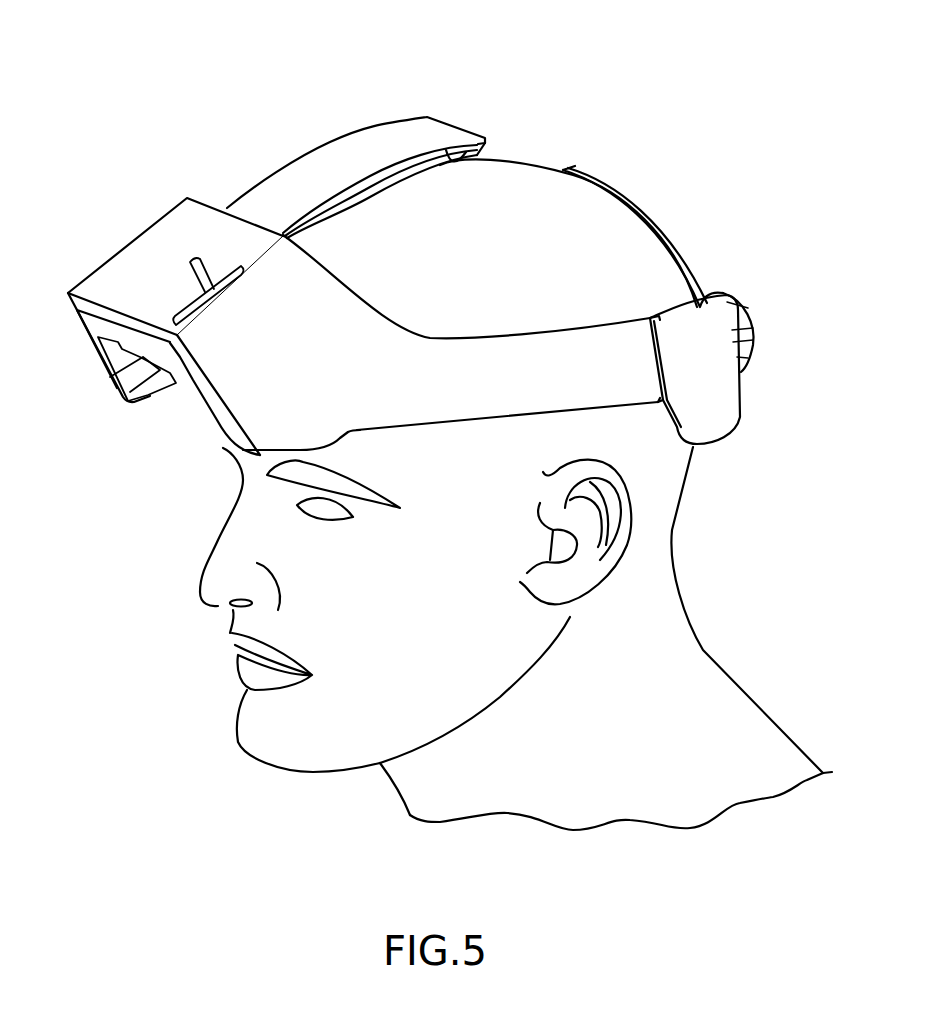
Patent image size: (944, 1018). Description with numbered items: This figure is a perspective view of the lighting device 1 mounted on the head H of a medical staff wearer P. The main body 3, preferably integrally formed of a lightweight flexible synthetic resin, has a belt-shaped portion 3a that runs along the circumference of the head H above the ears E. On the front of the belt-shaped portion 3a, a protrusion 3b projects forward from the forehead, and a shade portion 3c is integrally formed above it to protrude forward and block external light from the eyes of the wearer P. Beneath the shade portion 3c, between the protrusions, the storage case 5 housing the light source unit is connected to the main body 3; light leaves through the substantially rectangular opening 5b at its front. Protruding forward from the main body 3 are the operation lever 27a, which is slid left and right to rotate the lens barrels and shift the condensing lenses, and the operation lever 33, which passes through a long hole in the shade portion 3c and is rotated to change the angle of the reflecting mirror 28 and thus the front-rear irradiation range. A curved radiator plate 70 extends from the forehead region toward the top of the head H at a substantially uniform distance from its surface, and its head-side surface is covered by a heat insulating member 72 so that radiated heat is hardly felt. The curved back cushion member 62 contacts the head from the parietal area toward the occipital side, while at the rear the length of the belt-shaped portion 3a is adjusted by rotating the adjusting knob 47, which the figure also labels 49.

The lighting device 1 is at (447, 292).
The radiator plate 70 is at (333, 157).
The heat insulating member 72 is at (466, 146).
The operation lever 33 is at (210, 262).
The shade portion 3c is at (140, 247).
The back cushion member 62 is at (617, 205).
The head H is at (592, 235).
The main body 3 is at (477, 332).
The belt-shaped portion 3a is at (573, 343).
The protrusion 3b is at (308, 387).
The adjustment dial 49 is at (790, 332).
The adjusting knob 47 is at (745, 325).
The storage case 5 is at (97, 328).
The operation lever 27a is at (128, 375).
The reflecting mirror 28 is at (157, 390).
The opening 5b is at (185, 400).
The ear E is at (622, 533).
The medical staff P is at (516, 638).